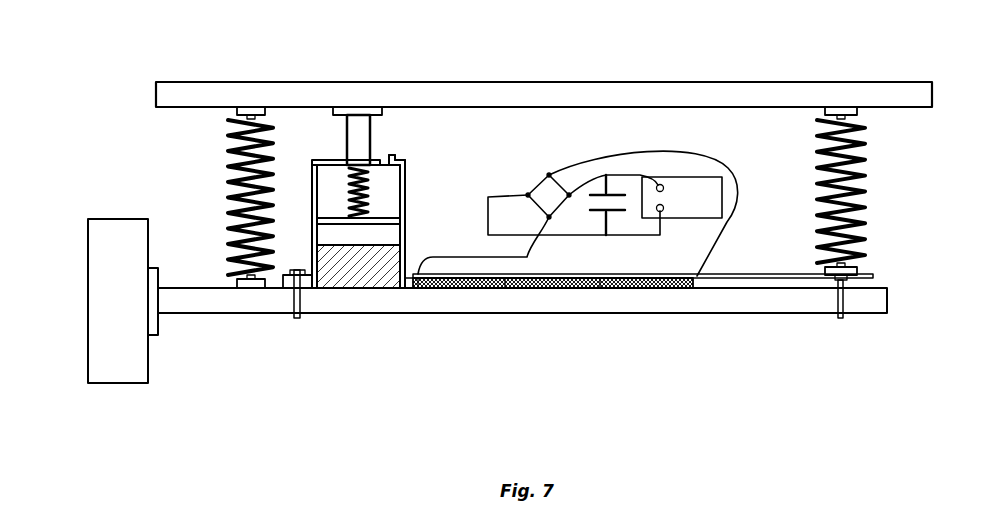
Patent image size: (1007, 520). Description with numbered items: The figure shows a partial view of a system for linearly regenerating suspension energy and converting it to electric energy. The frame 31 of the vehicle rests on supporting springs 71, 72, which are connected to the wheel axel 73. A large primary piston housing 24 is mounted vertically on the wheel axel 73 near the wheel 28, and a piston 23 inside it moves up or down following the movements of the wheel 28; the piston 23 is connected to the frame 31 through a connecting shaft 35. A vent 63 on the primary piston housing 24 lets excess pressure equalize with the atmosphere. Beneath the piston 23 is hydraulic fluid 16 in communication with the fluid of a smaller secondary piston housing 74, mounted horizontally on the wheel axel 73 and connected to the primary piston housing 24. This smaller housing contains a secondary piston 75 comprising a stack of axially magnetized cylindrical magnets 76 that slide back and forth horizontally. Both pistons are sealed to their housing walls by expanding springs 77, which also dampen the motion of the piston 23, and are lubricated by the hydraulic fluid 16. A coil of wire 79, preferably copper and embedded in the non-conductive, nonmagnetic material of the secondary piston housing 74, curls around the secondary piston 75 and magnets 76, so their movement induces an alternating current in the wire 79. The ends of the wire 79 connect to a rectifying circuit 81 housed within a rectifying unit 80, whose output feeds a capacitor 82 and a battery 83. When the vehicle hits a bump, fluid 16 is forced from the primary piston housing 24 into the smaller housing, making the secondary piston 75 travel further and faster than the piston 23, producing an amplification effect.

The frame 31 is at (497, 82).
The wheel 28 is at (88, 300).
The wheel axel 73 is at (230, 313).
The supporting spring 71 is at (228, 156).
The supporting spring 72 is at (866, 159).
The connecting shaft 35 is at (347, 132).
The piston 23 is at (318, 215).
The vent 63 is at (392, 157).
The primary piston housing 24 is at (405, 170).
The expanding spring 77 is at (370, 190).
The hydraulic fluid 16 is at (355, 290).
The secondary piston housing 74 is at (700, 275).
The secondary piston 75 is at (523, 290).
The axially magnetized cylindrical magnets 76 is at (558, 290).
The coil of wire 79 is at (432, 258).
The rectifying unit 80 is at (578, 162).
The rectifying circuit 81 is at (560, 203).
The capacitor 82 is at (592, 212).
The battery 83 is at (711, 205).